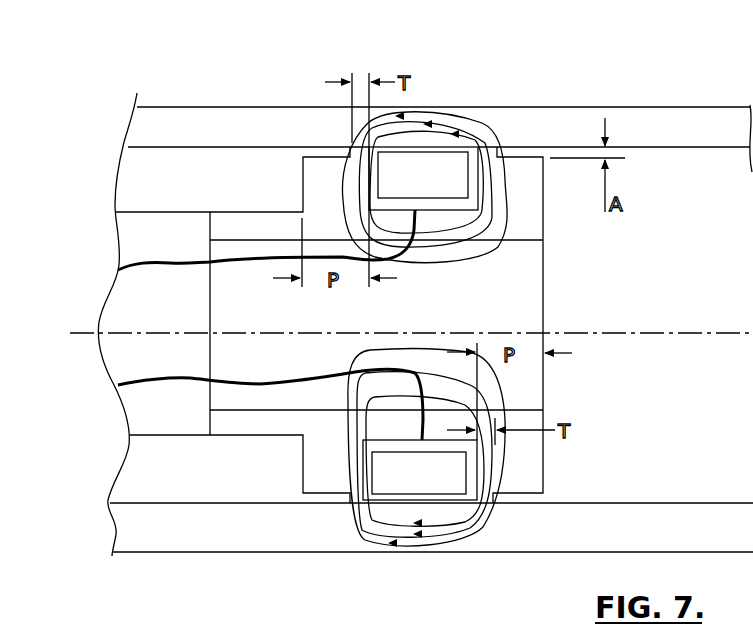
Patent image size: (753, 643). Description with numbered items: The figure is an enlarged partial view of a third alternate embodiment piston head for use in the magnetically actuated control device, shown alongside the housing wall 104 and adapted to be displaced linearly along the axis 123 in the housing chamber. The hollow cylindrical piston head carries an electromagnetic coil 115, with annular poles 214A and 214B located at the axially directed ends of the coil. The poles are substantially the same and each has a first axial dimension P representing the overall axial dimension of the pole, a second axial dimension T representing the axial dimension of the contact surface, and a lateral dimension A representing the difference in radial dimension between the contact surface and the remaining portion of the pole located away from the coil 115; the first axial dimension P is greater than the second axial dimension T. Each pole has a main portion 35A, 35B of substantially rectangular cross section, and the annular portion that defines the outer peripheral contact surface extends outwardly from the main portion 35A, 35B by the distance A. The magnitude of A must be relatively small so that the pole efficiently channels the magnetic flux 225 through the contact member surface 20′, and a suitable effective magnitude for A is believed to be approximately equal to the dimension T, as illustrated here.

The housing wall 104 is at (162, 122).
The pole 214A is at (312, 142).
The pole 214B is at (534, 145).
The electromagnetic coil 115 is at (450, 167).
The contact member surface 20′ is at (493, 143).
The magnetic flux 225 is at (473, 250).
The axis 123 is at (648, 332).
The main portion 35A is at (527, 467).
The main portion 35B is at (310, 462).